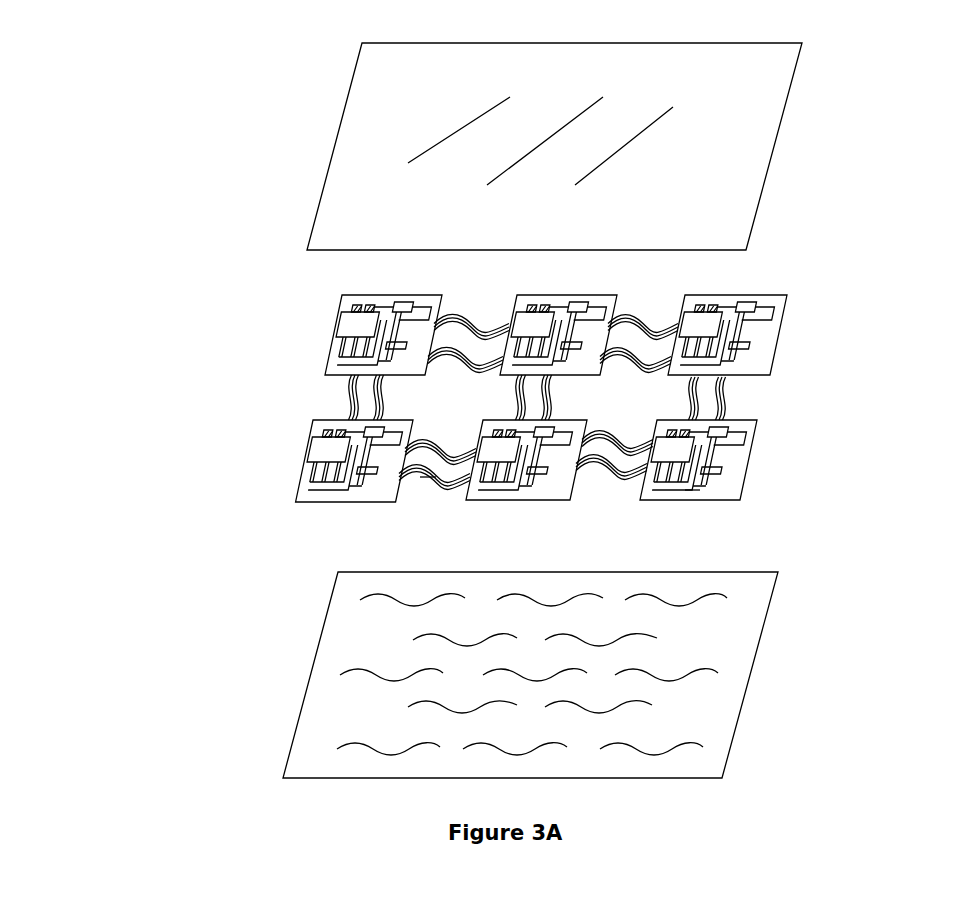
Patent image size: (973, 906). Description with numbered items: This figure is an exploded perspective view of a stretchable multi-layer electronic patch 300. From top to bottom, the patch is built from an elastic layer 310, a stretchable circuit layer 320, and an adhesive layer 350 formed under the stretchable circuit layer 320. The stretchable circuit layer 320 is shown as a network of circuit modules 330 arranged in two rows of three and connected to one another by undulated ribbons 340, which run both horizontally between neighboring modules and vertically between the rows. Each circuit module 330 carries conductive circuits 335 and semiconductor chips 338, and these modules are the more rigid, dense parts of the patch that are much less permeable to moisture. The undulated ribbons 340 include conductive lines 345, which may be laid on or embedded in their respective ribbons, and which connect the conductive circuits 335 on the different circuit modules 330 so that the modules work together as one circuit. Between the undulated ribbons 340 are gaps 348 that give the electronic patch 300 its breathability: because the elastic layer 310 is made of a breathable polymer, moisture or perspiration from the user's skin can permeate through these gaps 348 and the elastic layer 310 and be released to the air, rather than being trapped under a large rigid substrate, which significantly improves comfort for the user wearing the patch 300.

The electronic patch 300 is at (187, 36).
The elastic layer 310 is at (766, 121).
The stretchable circuit layer 320 is at (878, 282).
The circuit module 330 is at (345, 345).
The conductive circuit 335 is at (693, 493).
The semiconductor chip 338 is at (752, 303).
The undulated ribbon 340 is at (467, 327).
The conductive line 345 is at (428, 475).
The gap 348 is at (478, 405).
The adhesive layer 350 is at (747, 632).